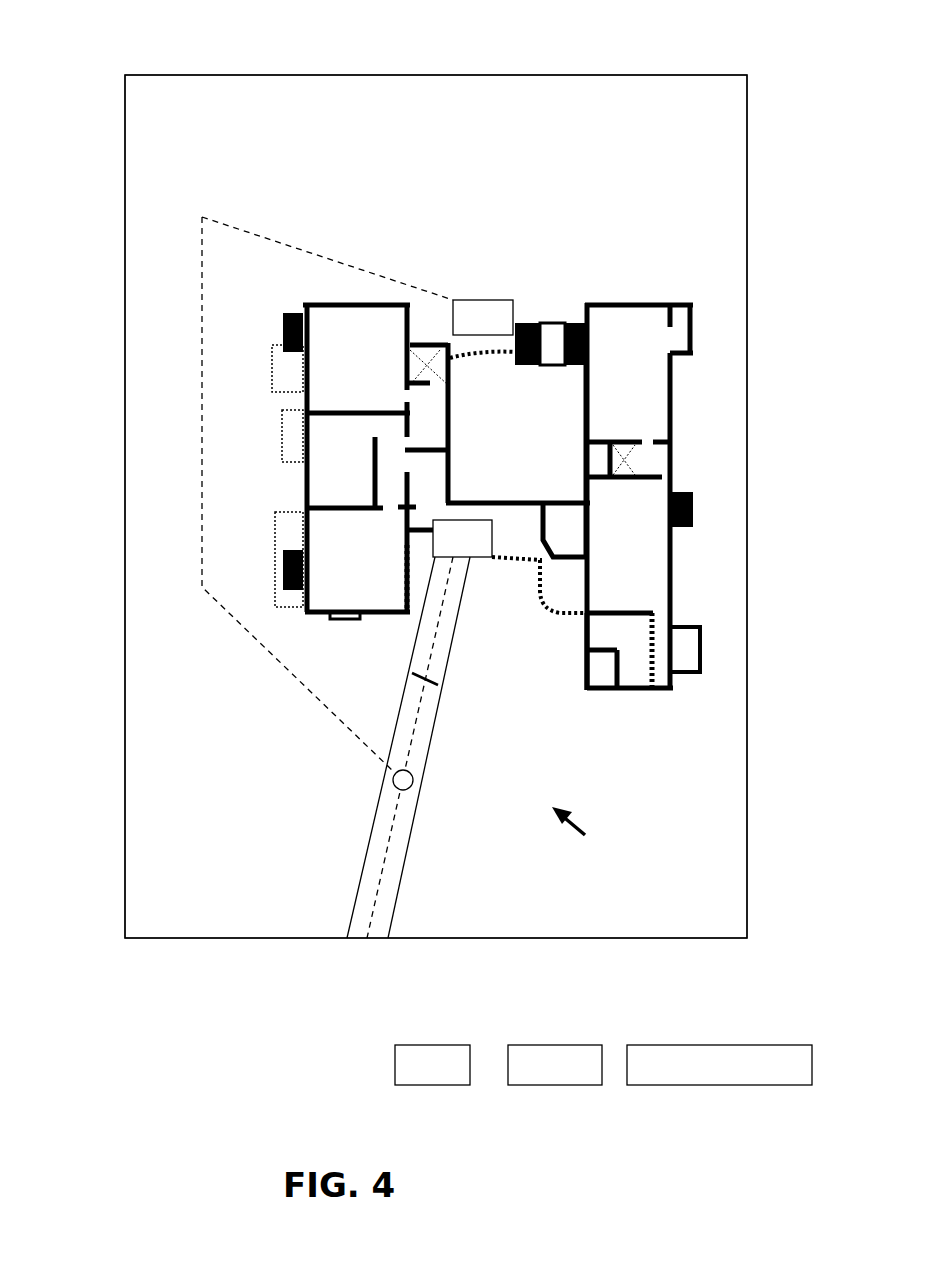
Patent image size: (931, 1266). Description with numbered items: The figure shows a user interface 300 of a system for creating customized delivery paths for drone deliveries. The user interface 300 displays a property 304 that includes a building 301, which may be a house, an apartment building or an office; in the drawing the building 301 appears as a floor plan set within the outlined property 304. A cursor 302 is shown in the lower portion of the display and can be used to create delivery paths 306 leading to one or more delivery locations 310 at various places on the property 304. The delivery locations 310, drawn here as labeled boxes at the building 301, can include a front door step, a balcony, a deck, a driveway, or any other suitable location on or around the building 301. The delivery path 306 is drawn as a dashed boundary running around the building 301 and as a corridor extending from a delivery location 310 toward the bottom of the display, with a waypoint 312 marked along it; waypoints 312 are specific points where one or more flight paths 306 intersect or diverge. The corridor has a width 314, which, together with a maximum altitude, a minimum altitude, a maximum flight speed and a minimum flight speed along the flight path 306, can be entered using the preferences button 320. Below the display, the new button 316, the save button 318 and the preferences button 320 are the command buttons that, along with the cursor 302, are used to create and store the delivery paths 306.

The user interface 300 is at (771, 57).
The building 301 is at (486, 496).
The cursor 302 is at (575, 818).
The property 304 is at (128, 708).
The delivery path 306 is at (255, 232).
The delivery location 310 is at (473, 428).
The waypoint 312 is at (395, 774).
The width 314 is at (427, 672).
The new button 316 is at (444, 1042).
The save button 318 is at (546, 1042).
The preferences button 320 is at (696, 1042).